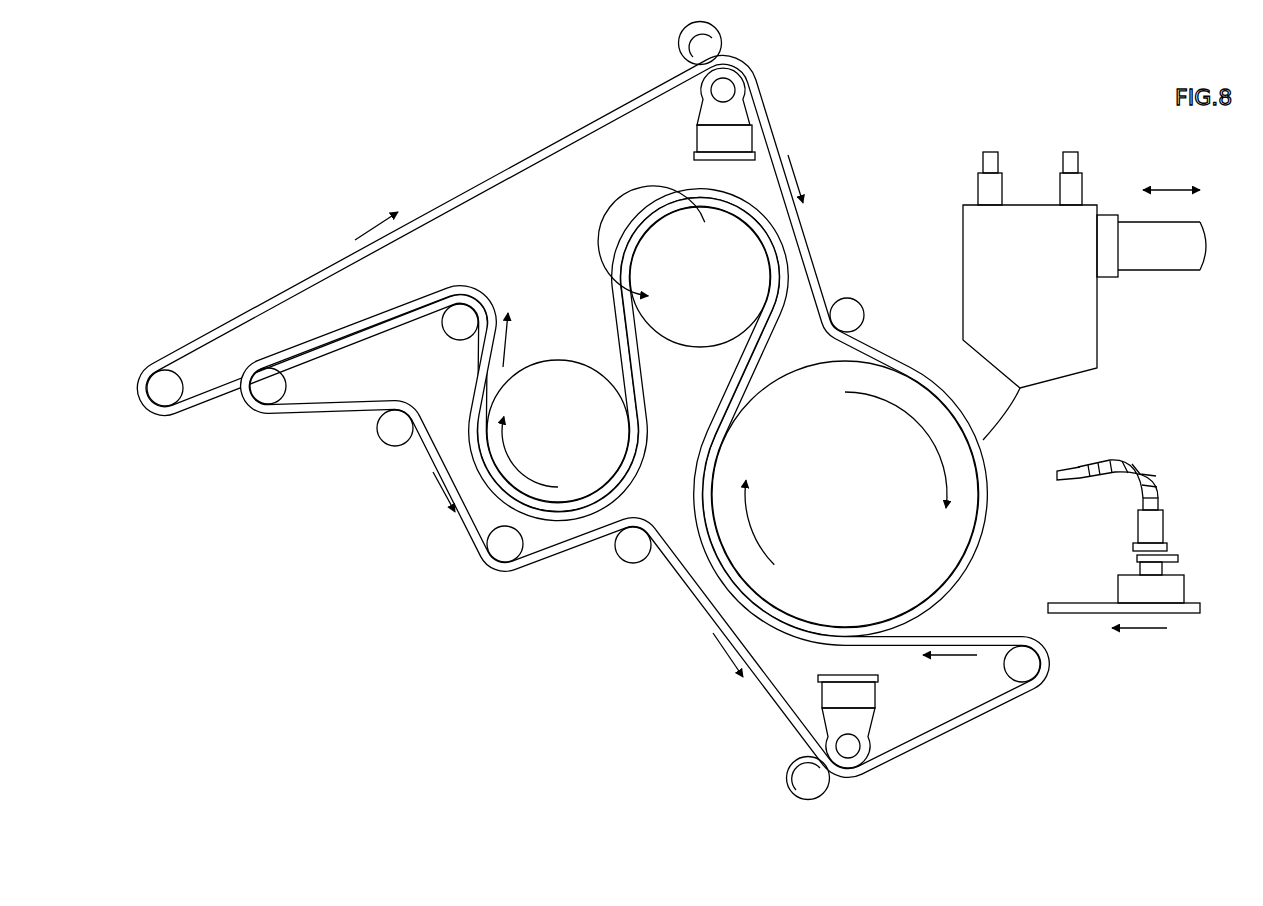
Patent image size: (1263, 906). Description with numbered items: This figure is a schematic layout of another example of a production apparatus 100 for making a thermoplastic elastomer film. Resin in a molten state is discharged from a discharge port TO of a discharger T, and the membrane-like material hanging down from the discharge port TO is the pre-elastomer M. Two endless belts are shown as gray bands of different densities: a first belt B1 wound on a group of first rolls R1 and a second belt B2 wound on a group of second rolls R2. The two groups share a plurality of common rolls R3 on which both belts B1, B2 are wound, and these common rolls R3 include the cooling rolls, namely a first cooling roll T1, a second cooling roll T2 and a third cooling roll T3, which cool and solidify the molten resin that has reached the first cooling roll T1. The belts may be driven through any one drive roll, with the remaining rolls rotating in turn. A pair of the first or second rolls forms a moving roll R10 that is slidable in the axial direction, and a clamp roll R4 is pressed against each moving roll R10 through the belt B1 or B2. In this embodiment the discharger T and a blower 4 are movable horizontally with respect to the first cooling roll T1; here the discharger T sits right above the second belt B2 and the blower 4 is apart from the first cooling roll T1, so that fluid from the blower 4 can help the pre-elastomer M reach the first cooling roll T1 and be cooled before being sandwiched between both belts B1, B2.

The first roll R1 is at (180, 380).
The moving roll R10 is at (821, 413).
The second roll R2 is at (287, 385).
The common roll R3 is at (444, 331).
The clamp roll R4 is at (680, 48).
The first belt B1 is at (568, 138).
The second belt B2 is at (700, 600).
The first cooling roll T1 is at (859, 508).
The second cooling roll T2 is at (715, 287).
The third cooling roll T3 is at (575, 441).
The discharger T is at (1043, 306).
The discharge port TO is at (1023, 390).
The pre-elastomer M is at (990, 483).
The production apparatus 100 is at (998, 729).
The blower 4 is at (1072, 482).